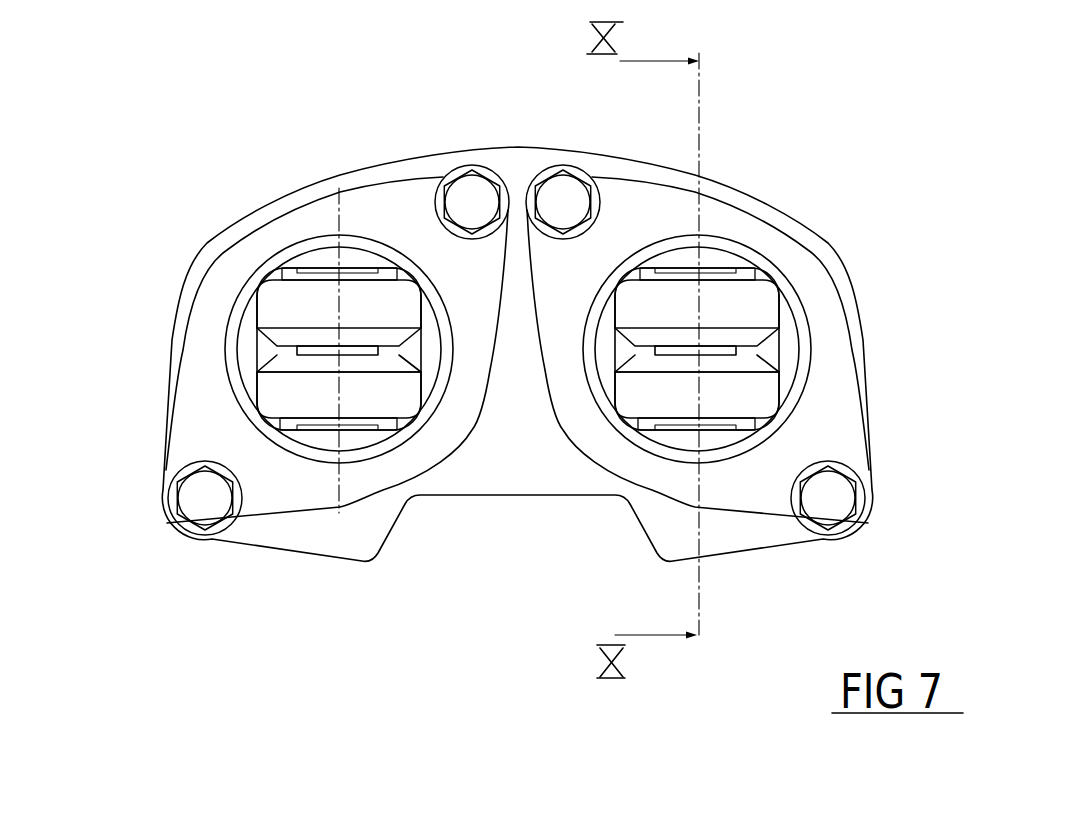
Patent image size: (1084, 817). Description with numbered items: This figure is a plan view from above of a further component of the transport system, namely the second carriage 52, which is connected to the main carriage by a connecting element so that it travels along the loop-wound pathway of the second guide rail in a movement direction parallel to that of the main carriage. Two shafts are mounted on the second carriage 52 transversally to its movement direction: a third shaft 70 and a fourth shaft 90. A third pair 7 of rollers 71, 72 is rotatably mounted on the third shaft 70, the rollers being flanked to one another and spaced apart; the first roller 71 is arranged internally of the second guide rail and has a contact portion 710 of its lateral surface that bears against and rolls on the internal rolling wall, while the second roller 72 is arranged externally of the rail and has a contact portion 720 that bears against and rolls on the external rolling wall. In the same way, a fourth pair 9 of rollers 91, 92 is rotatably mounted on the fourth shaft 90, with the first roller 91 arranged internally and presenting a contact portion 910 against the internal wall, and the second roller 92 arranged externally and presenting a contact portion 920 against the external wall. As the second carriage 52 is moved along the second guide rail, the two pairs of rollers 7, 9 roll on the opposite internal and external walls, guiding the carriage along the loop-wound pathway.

The second carriage 52 is at (467, 472).
The fourth pair of rollers 9 is at (231, 392).
The first roller 91 is at (277, 293).
The contact portion 910 is at (273, 332).
The fourth shaft 90 is at (310, 350).
The contact portion 920 is at (297, 367).
The second roller 92 is at (290, 402).
The third pair of rollers 7 is at (743, 330).
The first roller 71 is at (747, 302).
The contact portion 710 is at (650, 338).
The third shaft 70 is at (720, 352).
The contact portion 720 is at (632, 352).
The second roller 72 is at (760, 405).